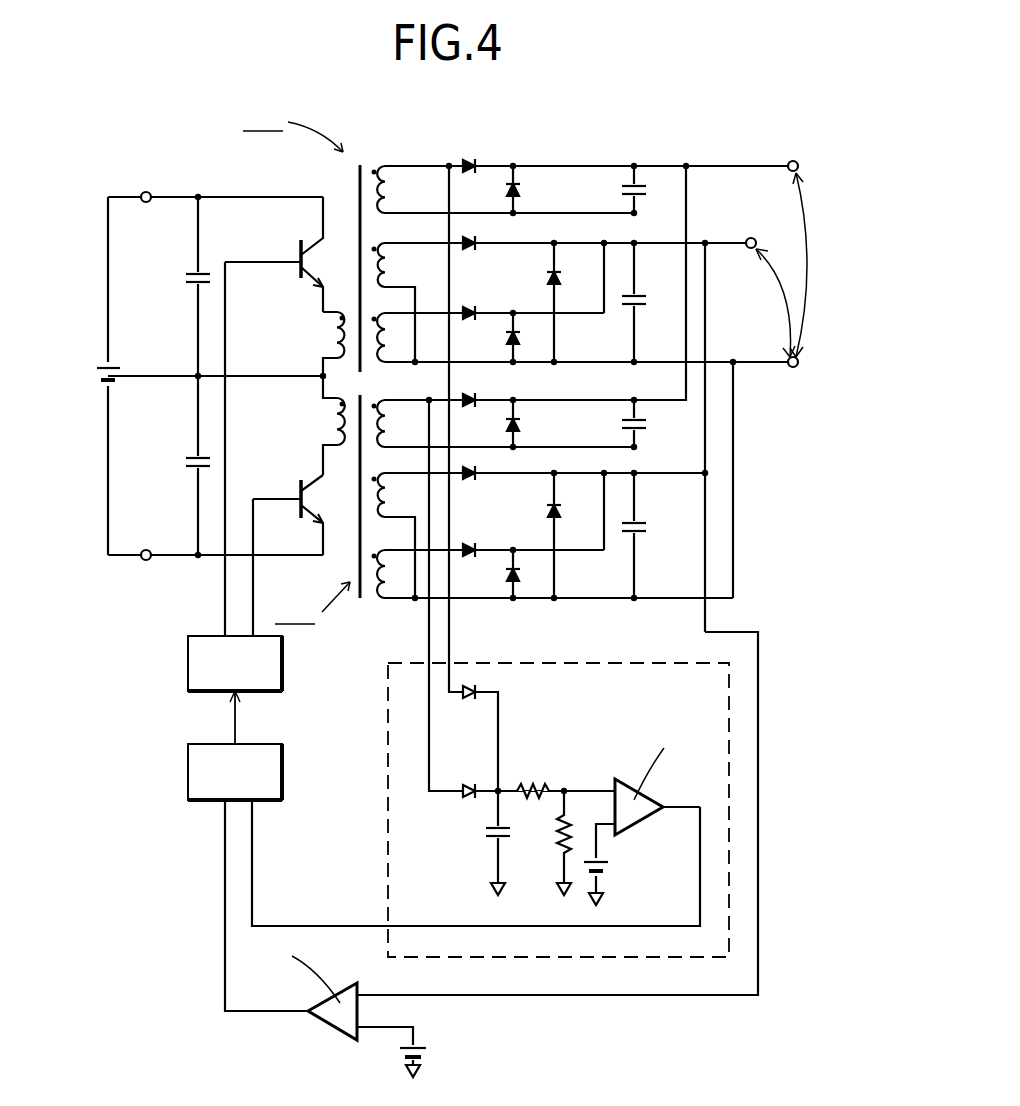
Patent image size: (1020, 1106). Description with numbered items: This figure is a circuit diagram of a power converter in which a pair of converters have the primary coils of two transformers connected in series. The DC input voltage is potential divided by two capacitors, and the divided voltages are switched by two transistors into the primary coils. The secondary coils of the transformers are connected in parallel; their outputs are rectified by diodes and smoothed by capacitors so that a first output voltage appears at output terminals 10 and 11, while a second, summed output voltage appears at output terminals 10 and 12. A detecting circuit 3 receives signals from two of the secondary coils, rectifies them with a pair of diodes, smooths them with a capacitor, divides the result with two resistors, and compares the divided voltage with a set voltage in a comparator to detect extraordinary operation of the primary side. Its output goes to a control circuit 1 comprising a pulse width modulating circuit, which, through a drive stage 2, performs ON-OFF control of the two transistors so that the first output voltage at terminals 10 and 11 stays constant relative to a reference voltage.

The control circuit 1 is at (188, 775).
The drive circuit 2 is at (188, 665).
The detecting circuit 3 is at (558, 614).
The output terminal 10 is at (792, 376).
The output terminal 11 is at (750, 232).
The output terminal 12 is at (793, 155).